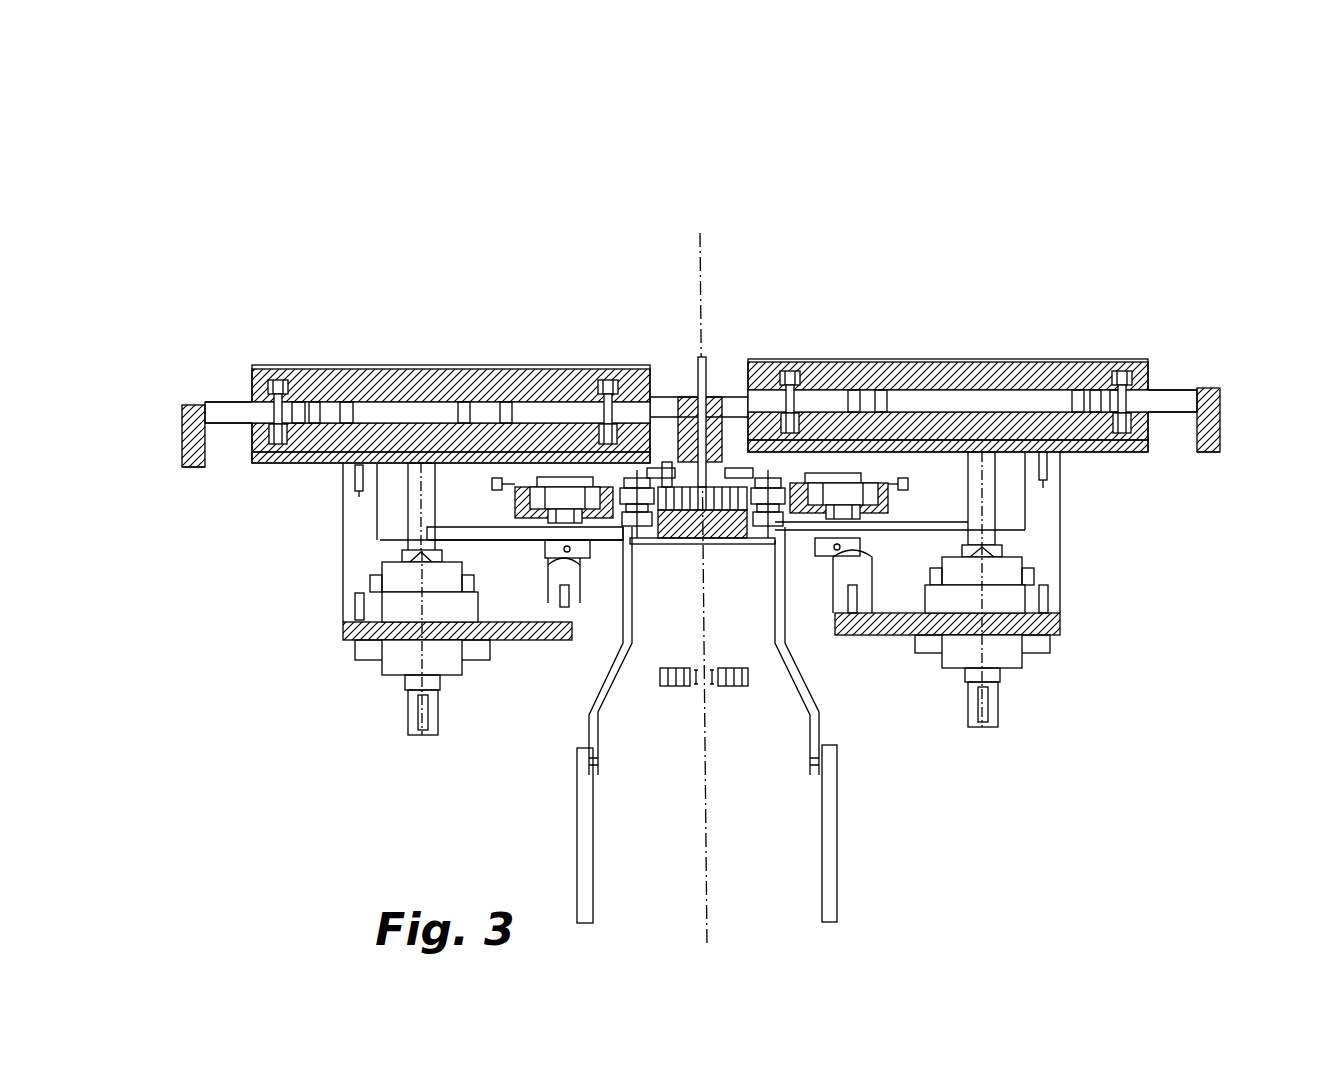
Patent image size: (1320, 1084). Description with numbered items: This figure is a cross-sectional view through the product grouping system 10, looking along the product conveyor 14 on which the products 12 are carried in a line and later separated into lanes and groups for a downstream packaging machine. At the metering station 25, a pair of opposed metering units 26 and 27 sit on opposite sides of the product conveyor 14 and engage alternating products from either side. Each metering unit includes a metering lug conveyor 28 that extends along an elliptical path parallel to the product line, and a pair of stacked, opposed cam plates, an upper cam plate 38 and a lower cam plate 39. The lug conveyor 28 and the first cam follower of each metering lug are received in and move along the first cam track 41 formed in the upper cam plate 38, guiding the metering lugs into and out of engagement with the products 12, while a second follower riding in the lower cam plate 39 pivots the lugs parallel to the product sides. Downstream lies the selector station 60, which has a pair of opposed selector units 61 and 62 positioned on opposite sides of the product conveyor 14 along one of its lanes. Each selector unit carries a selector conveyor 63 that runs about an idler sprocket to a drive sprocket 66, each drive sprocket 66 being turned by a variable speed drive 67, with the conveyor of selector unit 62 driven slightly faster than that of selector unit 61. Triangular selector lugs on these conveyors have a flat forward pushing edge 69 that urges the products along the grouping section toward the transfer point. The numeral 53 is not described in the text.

The product grouping system 10 is at (786, 186).
The products 12 is at (736, 372).
The product conveyor 14 is at (679, 540).
The metering station 25 is at (600, 248).
The metering unit 26 is at (422, 403).
The metering unit 27 is at (978, 375).
The metering lug conveyor 28 is at (276, 392).
The upper cam plate 38 is at (460, 400).
The lower cam plate 39 is at (330, 458).
The first cam track 41 is at (290, 392).
The central block 53 is at (706, 365).
The selector station 60 is at (527, 545).
The selector unit 61 is at (508, 508).
The selector unit 62 is at (893, 509).
The selector conveyor 63 is at (910, 482).
The drive sprocket 66 is at (813, 487).
The variable speed drive 67 is at (876, 561).
The forward pushing edge 69 is at (669, 395).